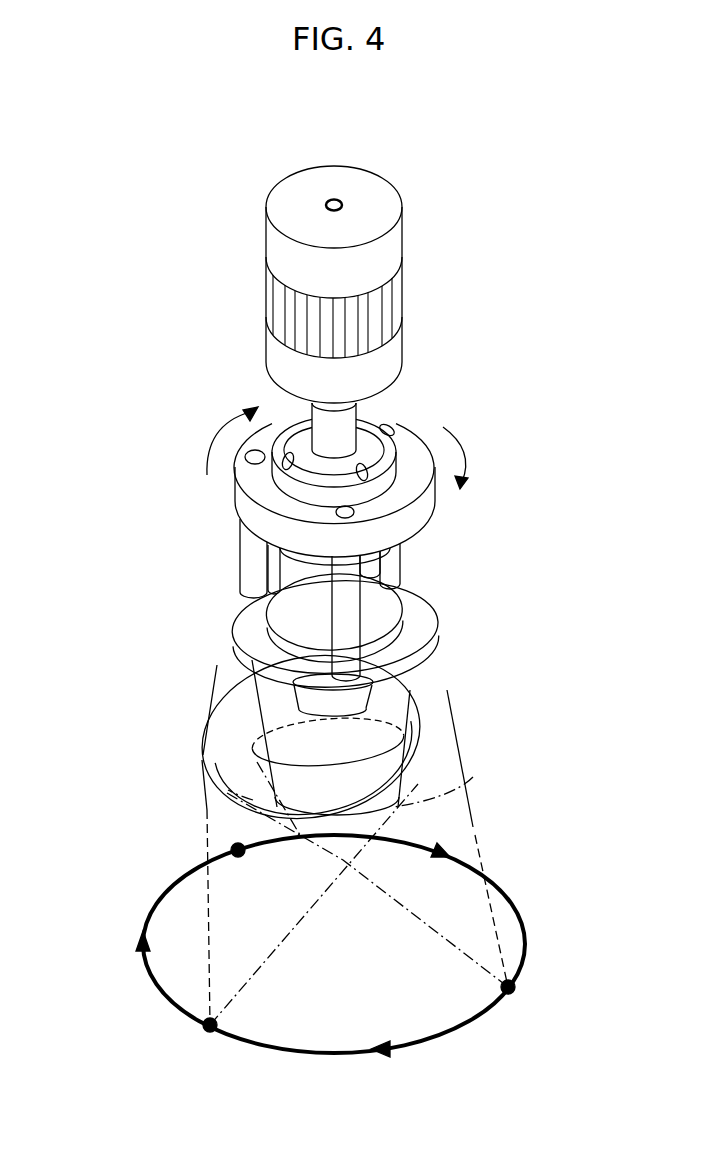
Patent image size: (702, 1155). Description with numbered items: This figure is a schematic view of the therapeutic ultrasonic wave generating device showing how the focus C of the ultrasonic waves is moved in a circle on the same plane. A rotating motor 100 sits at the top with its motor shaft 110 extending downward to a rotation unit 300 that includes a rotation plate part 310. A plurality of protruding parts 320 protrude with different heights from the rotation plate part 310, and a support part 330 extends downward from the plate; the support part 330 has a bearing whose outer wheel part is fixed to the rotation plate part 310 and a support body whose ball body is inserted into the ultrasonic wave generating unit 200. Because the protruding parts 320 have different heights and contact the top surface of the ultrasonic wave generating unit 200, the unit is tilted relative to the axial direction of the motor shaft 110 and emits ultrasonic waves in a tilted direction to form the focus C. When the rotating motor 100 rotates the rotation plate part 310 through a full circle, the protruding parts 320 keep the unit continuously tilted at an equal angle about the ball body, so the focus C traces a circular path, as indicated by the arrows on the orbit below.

The rotating motor 100 is at (390, 262).
The motor shaft 110 is at (362, 418).
The ultrasonic wave generating unit 200 is at (200, 717).
The rotation unit 300 is at (212, 385).
The rotation plate part 310 is at (428, 500).
The protruding parts 320 is at (243, 598).
The support part 330 is at (405, 557).
The focus c is at (236, 850).